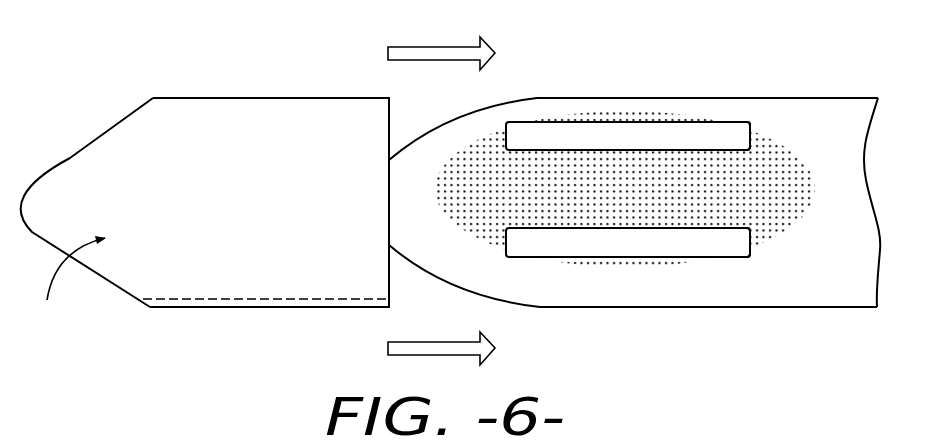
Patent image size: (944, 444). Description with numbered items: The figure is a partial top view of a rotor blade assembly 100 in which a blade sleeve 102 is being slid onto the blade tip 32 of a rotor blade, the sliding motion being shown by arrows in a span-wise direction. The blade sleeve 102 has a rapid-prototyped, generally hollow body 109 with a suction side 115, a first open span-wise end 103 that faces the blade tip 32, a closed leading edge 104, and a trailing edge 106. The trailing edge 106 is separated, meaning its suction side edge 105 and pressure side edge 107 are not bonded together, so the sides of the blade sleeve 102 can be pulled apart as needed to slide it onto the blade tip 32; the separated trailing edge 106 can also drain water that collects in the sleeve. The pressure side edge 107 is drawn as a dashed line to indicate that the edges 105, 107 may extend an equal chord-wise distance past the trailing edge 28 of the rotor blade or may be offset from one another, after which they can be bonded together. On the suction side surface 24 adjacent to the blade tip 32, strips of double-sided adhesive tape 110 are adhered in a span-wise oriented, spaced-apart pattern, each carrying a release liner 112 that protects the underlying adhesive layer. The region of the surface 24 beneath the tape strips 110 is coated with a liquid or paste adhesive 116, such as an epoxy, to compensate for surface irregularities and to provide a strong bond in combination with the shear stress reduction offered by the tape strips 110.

The rotor blade assembly 100 is at (558, 78).
The suction side surface 24 is at (800, 115).
The trailing edge 28 is at (578, 308).
The blade tip 32 is at (415, 262).
The blade sleeve 102 is at (323, 96).
The first open span-wise end 103 is at (395, 128).
The closed leading edge 104 is at (203, 98).
The suction side edge 105 is at (205, 308).
The trailing edge 106 is at (293, 318).
The pressure side edge 107 is at (323, 298).
The hollow body 109 is at (64, 288).
The double-sided adhesive tape strips 110 is at (662, 135).
The release liner 112 is at (728, 137).
The suction side 115 is at (110, 115).
The liquid or paste adhesive 116 is at (535, 207).